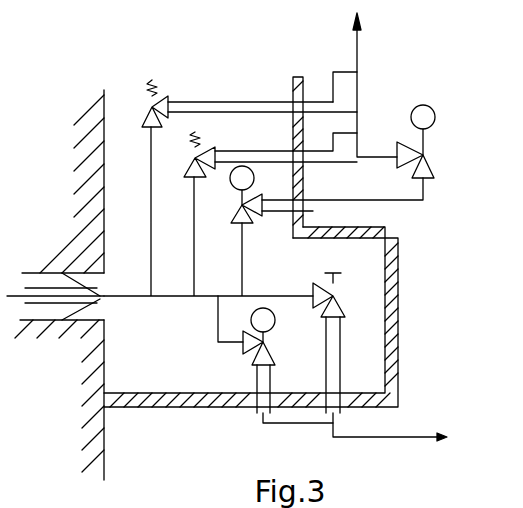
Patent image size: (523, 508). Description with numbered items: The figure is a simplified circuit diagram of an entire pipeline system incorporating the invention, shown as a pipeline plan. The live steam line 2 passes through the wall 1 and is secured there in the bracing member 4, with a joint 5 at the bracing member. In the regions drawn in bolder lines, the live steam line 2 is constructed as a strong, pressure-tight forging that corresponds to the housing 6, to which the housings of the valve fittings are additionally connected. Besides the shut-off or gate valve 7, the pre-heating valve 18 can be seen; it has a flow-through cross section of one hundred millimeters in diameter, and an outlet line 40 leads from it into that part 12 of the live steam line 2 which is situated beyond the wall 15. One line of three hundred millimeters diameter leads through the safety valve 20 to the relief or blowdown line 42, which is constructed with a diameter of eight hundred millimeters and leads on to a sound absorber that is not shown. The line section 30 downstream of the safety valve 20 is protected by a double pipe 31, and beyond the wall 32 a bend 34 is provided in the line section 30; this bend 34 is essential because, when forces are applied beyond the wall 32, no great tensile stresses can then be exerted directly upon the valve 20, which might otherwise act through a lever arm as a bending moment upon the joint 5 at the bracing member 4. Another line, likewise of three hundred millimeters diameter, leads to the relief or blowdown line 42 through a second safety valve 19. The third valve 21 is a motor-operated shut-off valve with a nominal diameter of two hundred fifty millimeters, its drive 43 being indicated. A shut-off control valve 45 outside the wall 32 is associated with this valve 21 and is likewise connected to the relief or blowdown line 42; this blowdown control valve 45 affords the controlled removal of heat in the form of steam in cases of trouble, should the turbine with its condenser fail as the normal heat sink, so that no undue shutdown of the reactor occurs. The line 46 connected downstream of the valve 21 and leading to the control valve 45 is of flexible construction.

The wall 1 is at (93, 156).
The live steam line 2 is at (14, 297).
The bracing member 4 is at (90, 307).
The joint 5 is at (105, 295).
The housing 6 is at (177, 318).
The shut-off valve 7 is at (342, 298).
The part of the live steam line 12 is at (329, 427).
The wall 15 is at (358, 402).
The pre-heating valve 18 is at (275, 352).
The second safety valve 19 is at (188, 163).
The safety valve 20 is at (143, 120).
The motor-operated shut-off valve 21 is at (235, 212).
The line section 30 is at (246, 100).
The double pipe 31 is at (193, 100).
The wall 32 is at (296, 77).
The bend 34 is at (333, 108).
The outlet line 40 is at (262, 422).
The relief or blowdown line 42 is at (362, 63).
The drive 43 is at (254, 178).
The shut-off control valve 45 is at (433, 152).
The line 46 is at (423, 190).